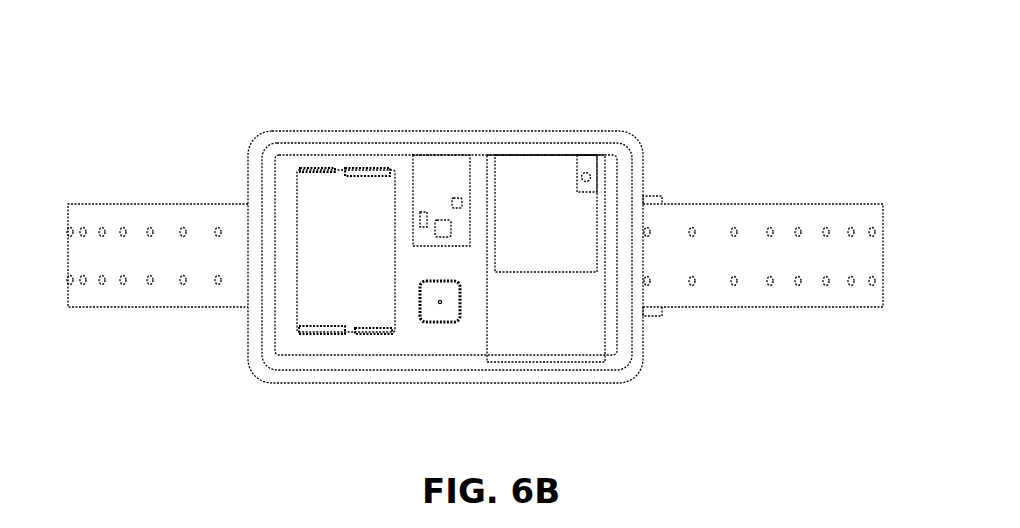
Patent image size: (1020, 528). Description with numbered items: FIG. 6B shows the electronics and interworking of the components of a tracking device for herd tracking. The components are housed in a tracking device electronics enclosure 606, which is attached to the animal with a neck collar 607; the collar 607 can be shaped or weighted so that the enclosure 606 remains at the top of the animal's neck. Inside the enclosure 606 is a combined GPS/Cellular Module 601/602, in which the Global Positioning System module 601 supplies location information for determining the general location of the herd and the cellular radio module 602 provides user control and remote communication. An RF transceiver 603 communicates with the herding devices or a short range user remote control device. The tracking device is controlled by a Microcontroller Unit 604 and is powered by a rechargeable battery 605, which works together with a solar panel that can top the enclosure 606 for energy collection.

The Global Positioning System (GPS) Module 601 is at (550, 191).
The cellular radio module 602 is at (546, 213).
The RF transceiver 603 is at (441, 172).
The Microcontroller Unit 604 is at (440, 306).
The rechargeable battery 605 is at (337, 198).
The tracking device electronics enclosure 606 is at (642, 346).
The neck collar 607 is at (129, 216).